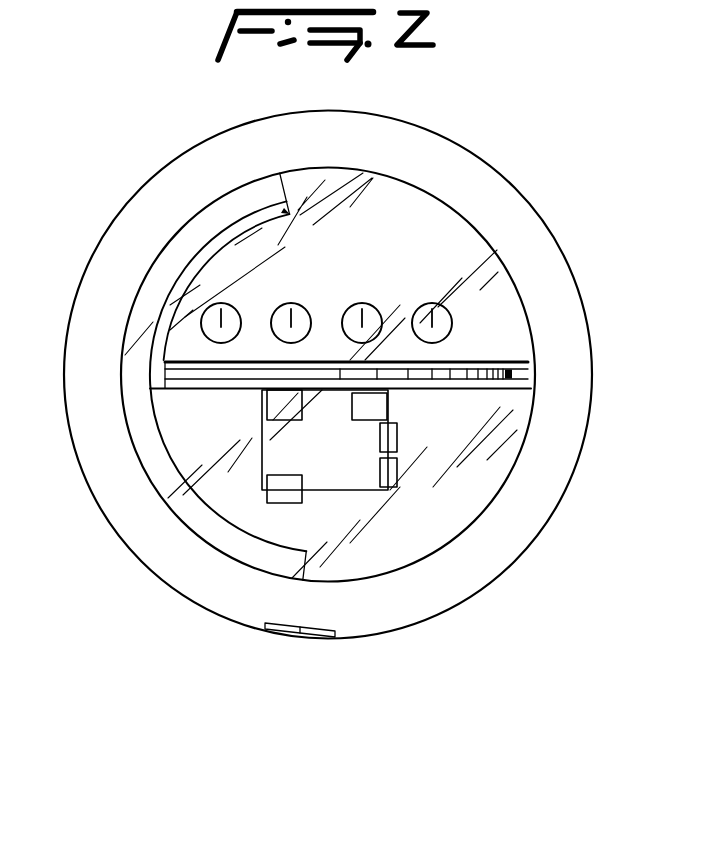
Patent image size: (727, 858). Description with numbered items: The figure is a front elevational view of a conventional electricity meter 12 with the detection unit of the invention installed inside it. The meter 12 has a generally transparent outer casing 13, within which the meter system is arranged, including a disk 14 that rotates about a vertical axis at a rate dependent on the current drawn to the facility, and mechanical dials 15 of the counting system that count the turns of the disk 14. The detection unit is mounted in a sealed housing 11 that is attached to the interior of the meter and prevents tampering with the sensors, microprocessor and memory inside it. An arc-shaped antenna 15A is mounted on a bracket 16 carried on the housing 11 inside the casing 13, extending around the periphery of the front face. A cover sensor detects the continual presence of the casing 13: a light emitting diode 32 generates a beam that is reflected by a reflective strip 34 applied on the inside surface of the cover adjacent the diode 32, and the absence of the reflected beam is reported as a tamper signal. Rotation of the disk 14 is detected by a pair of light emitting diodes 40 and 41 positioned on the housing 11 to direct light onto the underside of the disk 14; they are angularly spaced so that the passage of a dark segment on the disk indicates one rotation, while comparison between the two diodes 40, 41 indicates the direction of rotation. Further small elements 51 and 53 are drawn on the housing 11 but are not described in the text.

The housing 11 is at (337, 491).
The electricity meter 12 is at (558, 238).
The outer casing 13 is at (523, 200).
The disk 14 is at (515, 376).
The mechanical dials 15 is at (222, 301).
The antenna 15A is at (162, 258).
The bracket 16 is at (153, 347).
The light emitting diode 32 is at (273, 498).
The reflective strip 34 is at (287, 630).
The light emitting diode 40 is at (273, 402).
The light emitting diode 41 is at (380, 403).
The side element 51 is at (395, 440).
The side element 53 is at (395, 475).